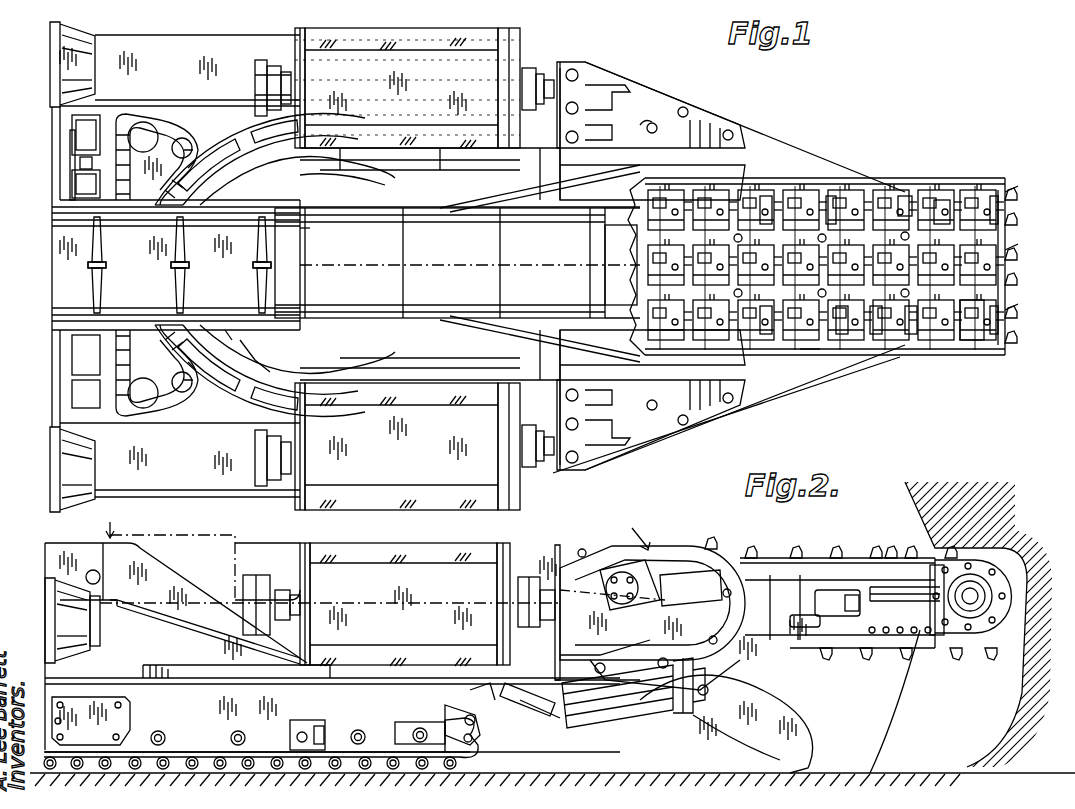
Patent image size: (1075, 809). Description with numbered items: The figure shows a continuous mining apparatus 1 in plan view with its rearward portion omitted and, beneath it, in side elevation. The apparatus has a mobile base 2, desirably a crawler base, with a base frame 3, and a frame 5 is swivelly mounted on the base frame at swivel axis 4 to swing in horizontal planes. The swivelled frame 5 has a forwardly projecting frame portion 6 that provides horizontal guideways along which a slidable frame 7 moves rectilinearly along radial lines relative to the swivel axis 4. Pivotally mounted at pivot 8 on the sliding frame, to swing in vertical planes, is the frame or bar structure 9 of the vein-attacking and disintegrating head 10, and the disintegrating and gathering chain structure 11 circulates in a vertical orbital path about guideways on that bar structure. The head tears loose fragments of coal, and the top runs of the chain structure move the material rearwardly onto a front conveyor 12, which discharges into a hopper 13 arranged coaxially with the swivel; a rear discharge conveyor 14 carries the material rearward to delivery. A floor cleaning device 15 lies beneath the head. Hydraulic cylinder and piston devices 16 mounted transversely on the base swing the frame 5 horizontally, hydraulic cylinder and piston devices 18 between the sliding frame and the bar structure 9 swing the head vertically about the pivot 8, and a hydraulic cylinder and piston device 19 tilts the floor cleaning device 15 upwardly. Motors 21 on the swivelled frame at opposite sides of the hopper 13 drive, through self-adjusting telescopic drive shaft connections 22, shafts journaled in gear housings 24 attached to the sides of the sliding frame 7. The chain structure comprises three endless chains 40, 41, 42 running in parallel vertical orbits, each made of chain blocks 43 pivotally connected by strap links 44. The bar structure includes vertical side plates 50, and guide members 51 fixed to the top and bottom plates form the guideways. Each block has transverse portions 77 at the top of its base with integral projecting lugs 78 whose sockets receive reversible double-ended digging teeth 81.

In FIG. 1, the continuous mining apparatus 1 is at (720, 425).
In FIG. 2, the continuous mining apparatus 1 is at (647, 529).
In FIG. 2, the mobile base 2 is at (470, 745).
In FIG. 1, the base frame 3 is at (200, 128).
In FIG. 2, the base frame 3 is at (764, 598).
In FIG. 1, the swivel axis 4 is at (300, 268).
In FIG. 1, the swivelled frame 5 is at (236, 384).
In FIG. 2, the swivelled frame 5 is at (155, 665).
In FIG. 1, the forwardly projecting frame portion 6 is at (515, 178).
In FIG. 2, the forwardly projecting frame portion 6 is at (488, 672).
In FIG. 1, the slidable frame 7 is at (604, 160).
In FIG. 2, the slidable frame 7 is at (558, 548).
In FIG. 2, the pivot 8 is at (690, 610).
In FIG. 1, the frame or bar structure 9 is at (835, 356).
In FIG. 2, the frame or bar structure 9 is at (896, 568).
In FIG. 1, the vein-attacking and disintegrating head 10 is at (856, 170).
In FIG. 2, the vein-attacking and disintegrating head 10 is at (786, 549).
In FIG. 1, the disintegrating and gathering chain structure 11 is at (923, 362).
In FIG. 2, the disintegrating and gathering chain structure 11 is at (905, 662).
In FIG. 1, the front conveyor 12 is at (540, 302).
In FIG. 1, the hopper 13 is at (235, 345).
In FIG. 1, the rear discharge conveyor 14 is at (95, 283).
In FIG. 2, the floor cleaning device 15 is at (800, 730).
In FIG. 1, the hydraulic cylinder and piston devices 16 is at (72, 183).
In FIG. 2, the hydraulic cylinder and piston devices 18 is at (655, 700).
In FIG. 2, the hydraulic cylinder and piston device 19 is at (540, 705).
In FIG. 1, the motors 21 is at (494, 36).
In FIG. 2, the motors 21 is at (392, 548).
In FIG. 1, the self-adjusting telescopic drive shaft connections 22 is at (537, 70).
In FIG. 2, the self-adjusting telescopic drive shaft connections 22 is at (518, 592).
In FIG. 1, the gear housings 24 is at (628, 82).
In FIG. 2, the gear housings 24 is at (672, 556).
In FIG. 1, the endless chain 40 is at (940, 185).
In FIG. 1, the endless chain 41 is at (848, 356).
In FIG. 1, the endless chain 42 is at (884, 356).
In FIG. 2, the endless chain 42 is at (747, 540).
In FIG. 1, the chain blocks 43 is at (906, 190).
In FIG. 1, the strap links 44 is at (830, 195).
In FIG. 1, the vertical side plates 50 is at (790, 178).
In FIG. 2, the vertical side plates 50 is at (928, 650).
In FIG. 1, the guide member 51 is at (990, 225).
In FIG. 1, the transverse portions 77 is at (990, 348).
In FIG. 2, the projecting lugs 78 is at (886, 553).
In FIG. 1, the digging teeth 81 is at (885, 182).
In FIG. 2, the digging teeth 81 is at (834, 548).